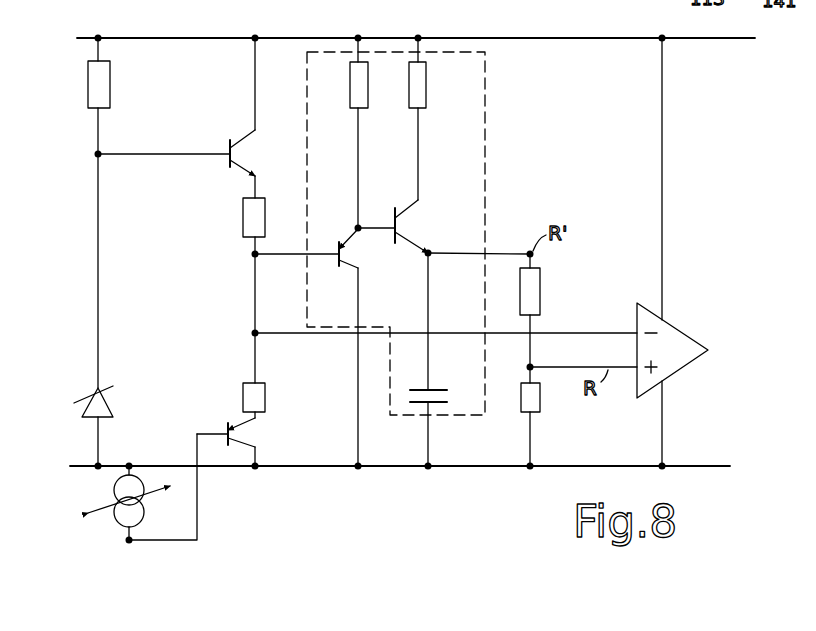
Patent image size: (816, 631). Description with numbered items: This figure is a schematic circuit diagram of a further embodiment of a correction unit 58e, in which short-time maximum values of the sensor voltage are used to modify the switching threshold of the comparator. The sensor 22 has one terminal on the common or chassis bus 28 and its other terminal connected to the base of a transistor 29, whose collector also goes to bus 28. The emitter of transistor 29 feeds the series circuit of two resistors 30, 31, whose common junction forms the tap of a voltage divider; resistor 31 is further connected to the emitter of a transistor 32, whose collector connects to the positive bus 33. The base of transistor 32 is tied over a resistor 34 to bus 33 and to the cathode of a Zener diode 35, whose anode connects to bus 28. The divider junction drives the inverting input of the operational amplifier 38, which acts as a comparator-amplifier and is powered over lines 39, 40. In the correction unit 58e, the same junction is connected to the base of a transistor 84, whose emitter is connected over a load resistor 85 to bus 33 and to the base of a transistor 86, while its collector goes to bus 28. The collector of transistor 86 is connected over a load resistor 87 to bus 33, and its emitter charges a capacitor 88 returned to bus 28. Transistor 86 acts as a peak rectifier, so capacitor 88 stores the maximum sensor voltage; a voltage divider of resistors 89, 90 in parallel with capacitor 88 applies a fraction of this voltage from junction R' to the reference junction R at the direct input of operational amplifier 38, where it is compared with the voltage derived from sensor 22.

The sensor 22 is at (145, 503).
The common bus 28 is at (305, 467).
The transistor 29 is at (252, 442).
The resistor 30 is at (263, 395).
The resistor 31 is at (256, 226).
The transistor 32 is at (245, 171).
The positive common bus 33 is at (346, 37).
The resistor 34 is at (110, 88).
The Zener diode 35 is at (100, 399).
The operational amplifier 38 is at (665, 378).
The power supply line 39 is at (663, 222).
The power supply line 40 is at (663, 431).
The correction unit 58e is at (470, 151).
The transistor 84 is at (336, 269).
The load resistor 85 is at (364, 100).
The transistor 86 is at (413, 211).
The load resistor 87 is at (421, 72).
The capacitor 88 is at (430, 386).
The resistor 89 is at (530, 292).
The resistor 90 is at (540, 408).